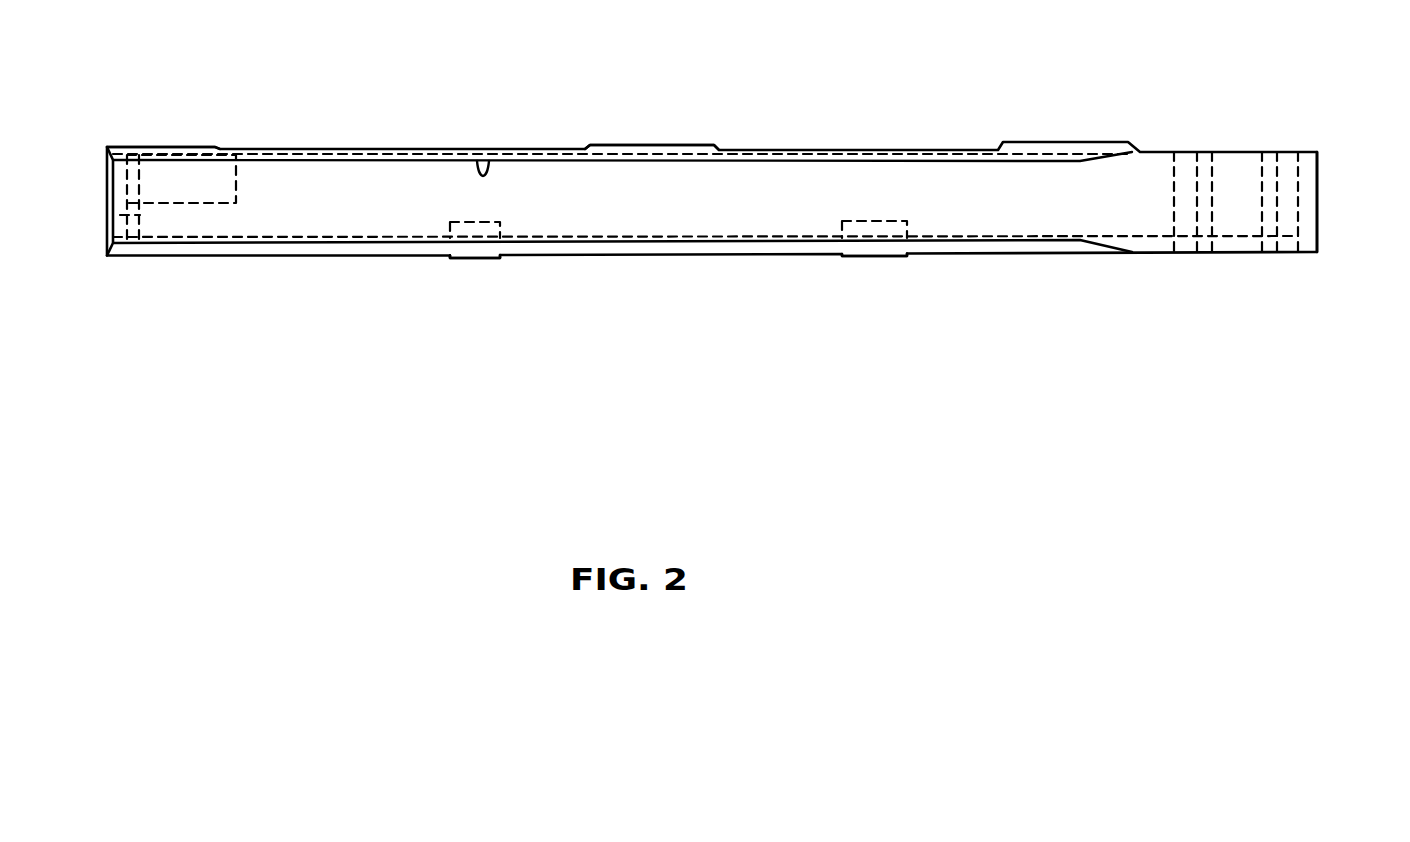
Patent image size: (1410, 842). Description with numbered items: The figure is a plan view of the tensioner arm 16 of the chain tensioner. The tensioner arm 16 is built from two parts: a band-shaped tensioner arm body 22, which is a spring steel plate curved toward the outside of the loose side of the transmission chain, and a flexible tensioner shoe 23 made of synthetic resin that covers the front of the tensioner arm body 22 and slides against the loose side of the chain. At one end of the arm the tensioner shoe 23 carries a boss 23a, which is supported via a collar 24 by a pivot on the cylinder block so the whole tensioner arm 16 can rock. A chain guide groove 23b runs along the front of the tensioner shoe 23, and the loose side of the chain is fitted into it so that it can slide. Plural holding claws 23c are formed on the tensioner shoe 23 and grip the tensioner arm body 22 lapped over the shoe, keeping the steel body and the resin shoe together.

The tensioner arm 16 is at (908, 124).
The tensioner arm body 22 is at (127, 215).
The tensioner shoe 23 is at (834, 190).
The boss 23a is at (1309, 207).
The chain guide groove 23b is at (471, 152).
The holding claws 23c is at (184, 150).
The collar 24 is at (1203, 165).